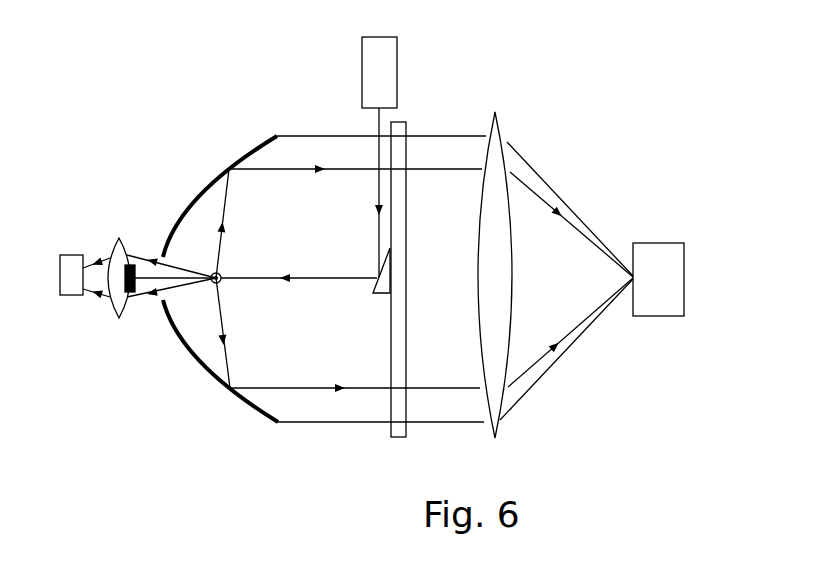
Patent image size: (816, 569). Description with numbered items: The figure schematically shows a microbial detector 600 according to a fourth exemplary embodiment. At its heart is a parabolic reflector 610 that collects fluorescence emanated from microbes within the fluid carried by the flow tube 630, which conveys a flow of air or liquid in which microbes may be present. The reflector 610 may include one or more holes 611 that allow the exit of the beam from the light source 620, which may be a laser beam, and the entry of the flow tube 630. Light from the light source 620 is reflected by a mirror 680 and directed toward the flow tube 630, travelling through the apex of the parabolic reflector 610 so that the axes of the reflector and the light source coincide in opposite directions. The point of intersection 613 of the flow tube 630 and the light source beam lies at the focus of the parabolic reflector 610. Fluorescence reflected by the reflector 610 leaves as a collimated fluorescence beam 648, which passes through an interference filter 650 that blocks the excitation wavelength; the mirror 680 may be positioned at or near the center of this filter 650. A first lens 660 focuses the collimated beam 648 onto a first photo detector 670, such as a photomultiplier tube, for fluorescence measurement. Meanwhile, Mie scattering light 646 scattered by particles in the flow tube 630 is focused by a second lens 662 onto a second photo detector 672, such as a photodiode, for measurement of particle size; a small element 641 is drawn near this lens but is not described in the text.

The microbial detector 600 is at (250, 73).
The parabolic reflector 610 is at (188, 291).
The holes 611 is at (163, 256).
The point of intersection 613 is at (210, 282).
The light source 620 is at (362, 60).
The flow tube 630 is at (220, 283).
The filter 641 is at (133, 263).
The Mie scattering light 646 is at (190, 284).
The collimated fluorescence beam 648 is at (345, 425).
The interference filter 650 is at (407, 129).
The first lens 660 is at (500, 422).
The second lens 662 is at (113, 312).
The first photo detector 670 is at (684, 275).
The second photo detector 672 is at (70, 265).
The mirror 680 is at (380, 296).